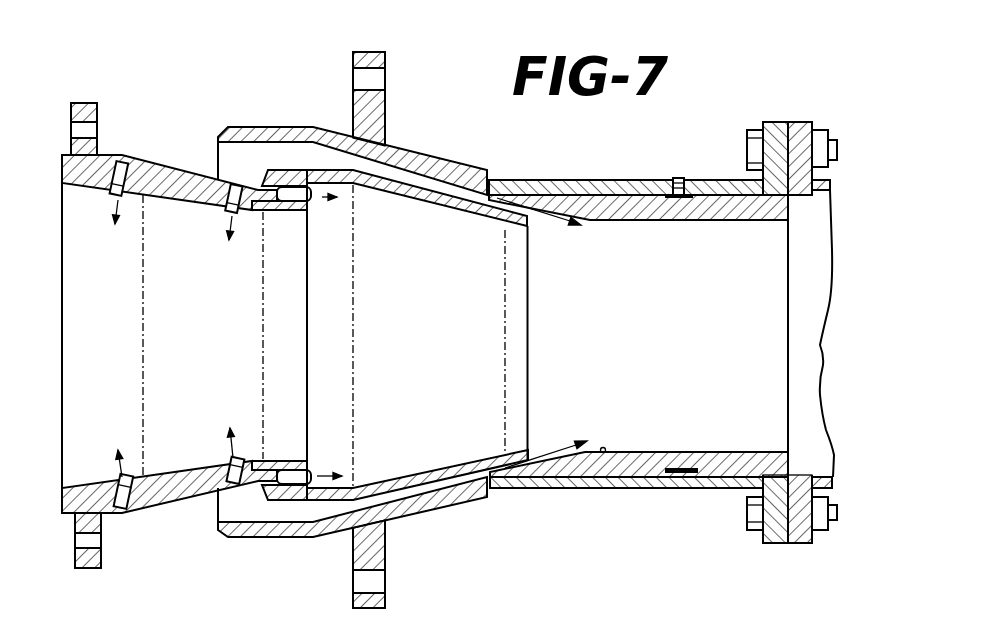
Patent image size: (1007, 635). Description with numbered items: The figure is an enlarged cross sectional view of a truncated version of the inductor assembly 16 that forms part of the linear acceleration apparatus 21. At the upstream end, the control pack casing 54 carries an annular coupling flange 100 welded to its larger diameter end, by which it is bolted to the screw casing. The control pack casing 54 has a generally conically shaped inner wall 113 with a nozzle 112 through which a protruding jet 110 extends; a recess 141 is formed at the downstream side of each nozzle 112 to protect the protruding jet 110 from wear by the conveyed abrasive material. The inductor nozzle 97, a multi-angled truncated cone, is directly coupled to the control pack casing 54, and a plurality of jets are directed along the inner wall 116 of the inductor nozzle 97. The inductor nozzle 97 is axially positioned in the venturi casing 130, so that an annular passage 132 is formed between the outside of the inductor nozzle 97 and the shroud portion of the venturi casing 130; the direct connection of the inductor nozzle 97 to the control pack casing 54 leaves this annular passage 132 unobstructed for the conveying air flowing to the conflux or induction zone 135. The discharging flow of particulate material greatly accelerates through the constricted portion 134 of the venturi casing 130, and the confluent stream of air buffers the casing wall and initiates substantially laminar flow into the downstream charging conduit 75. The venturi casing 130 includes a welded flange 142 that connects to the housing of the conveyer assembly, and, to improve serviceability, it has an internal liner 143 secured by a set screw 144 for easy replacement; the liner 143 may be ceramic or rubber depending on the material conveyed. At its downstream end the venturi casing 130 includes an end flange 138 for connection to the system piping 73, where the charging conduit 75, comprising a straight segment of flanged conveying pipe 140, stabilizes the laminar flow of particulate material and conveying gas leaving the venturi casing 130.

The coupling flange 100 is at (97, 105).
The control pack casing 54 is at (185, 509).
The protruding jet 110 is at (128, 507).
The nozzle 112 is at (116, 482).
The recess 141 is at (140, 478).
The conically shaped inner wall 113 is at (212, 466).
The charging conduit 75 is at (287, 351).
The inner wall of the inductor nozzle 116 is at (446, 468).
The annular passage 132 is at (310, 150).
The welded flange 142 is at (377, 128).
The inductor nozzle 97 is at (470, 462).
The inductor assembly 16 is at (483, 160).
The venturi casing 130 is at (602, 180).
The linear acceleration apparatus 21 is at (543, 497).
The set screw 144 is at (680, 178).
The internal liner 143 is at (683, 468).
The constricted portion 134 is at (606, 454).
The straight segment of flanged conveying pipe 140 is at (822, 178).
The end flange 138 is at (772, 545).
The system piping 73 is at (795, 545).
The conflux zone 135 is at (668, 332).